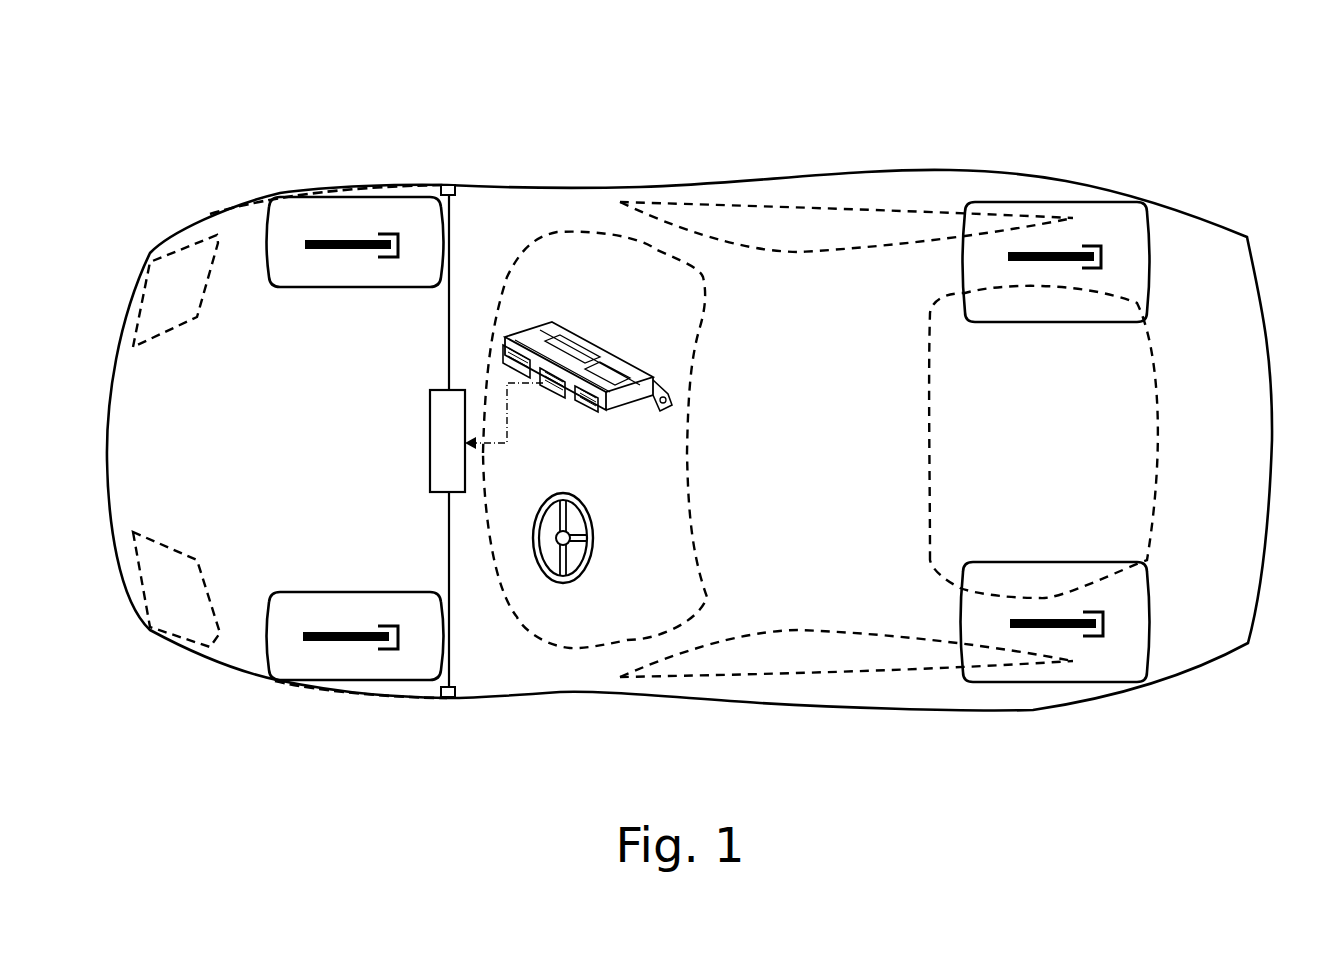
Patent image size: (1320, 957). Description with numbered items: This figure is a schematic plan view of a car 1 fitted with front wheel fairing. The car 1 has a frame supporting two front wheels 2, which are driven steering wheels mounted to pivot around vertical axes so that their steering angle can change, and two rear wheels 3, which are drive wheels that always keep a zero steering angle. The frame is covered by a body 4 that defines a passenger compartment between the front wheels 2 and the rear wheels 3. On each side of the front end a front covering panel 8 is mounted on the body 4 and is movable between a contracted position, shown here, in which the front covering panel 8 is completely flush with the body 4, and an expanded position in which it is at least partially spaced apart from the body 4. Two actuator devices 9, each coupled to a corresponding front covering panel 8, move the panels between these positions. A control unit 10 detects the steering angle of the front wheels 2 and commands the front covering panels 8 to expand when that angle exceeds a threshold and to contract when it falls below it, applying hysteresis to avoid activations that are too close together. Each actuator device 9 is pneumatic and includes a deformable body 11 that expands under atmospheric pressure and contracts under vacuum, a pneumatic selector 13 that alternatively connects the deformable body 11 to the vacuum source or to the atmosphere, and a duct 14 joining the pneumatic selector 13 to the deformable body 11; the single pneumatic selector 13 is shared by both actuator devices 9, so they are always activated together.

The car 1 is at (1202, 817).
The front wheels 2 is at (420, 275).
The rear wheels 3 is at (1130, 218).
The body 4 is at (200, 113).
The front covering panel 8 is at (289, 192).
The actuator device 9 is at (492, 143).
The control unit 10 is at (585, 362).
The deformable body 11 is at (446, 184).
The pneumatic selector 13 is at (432, 444).
The duct 14 is at (452, 205).